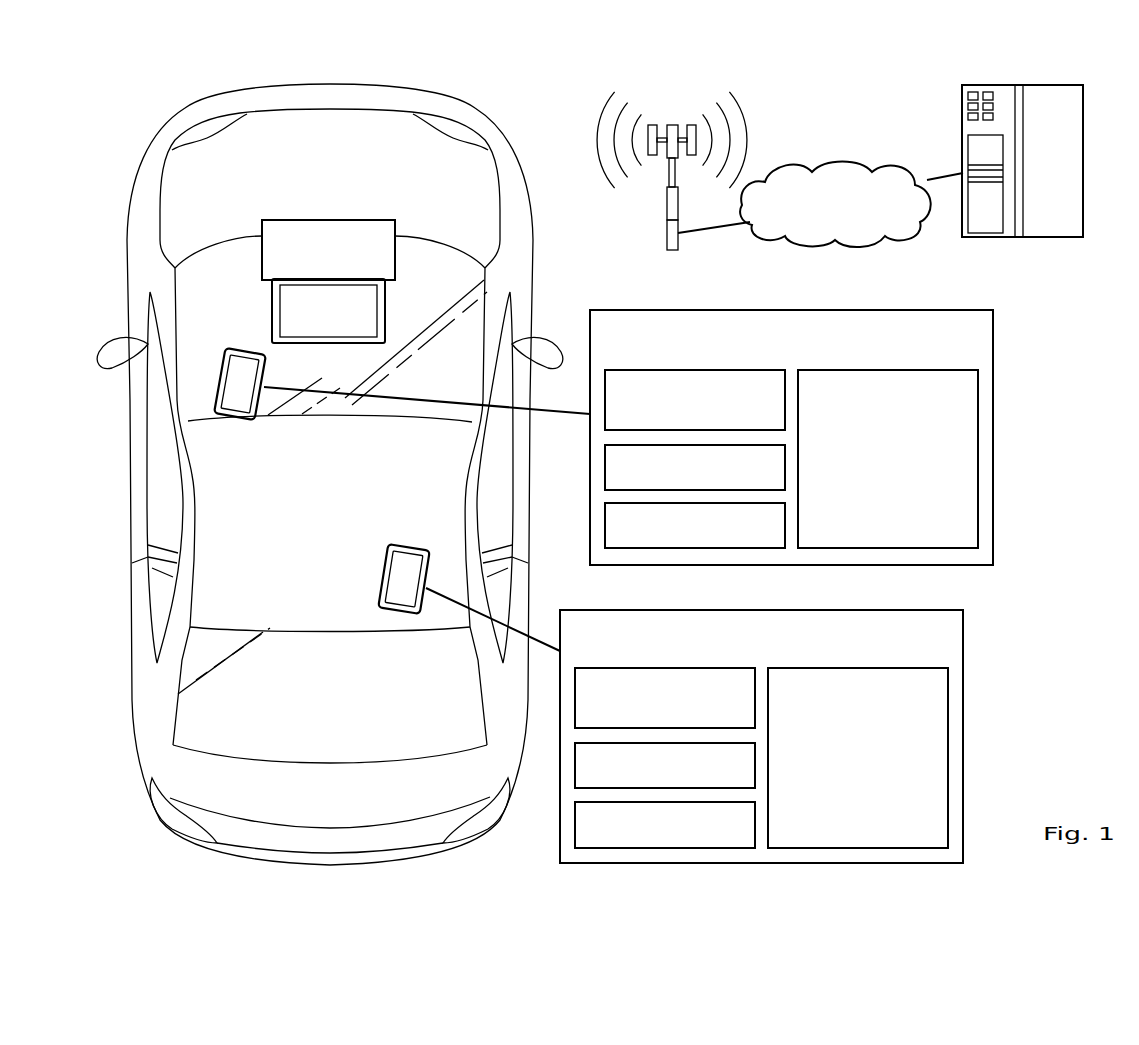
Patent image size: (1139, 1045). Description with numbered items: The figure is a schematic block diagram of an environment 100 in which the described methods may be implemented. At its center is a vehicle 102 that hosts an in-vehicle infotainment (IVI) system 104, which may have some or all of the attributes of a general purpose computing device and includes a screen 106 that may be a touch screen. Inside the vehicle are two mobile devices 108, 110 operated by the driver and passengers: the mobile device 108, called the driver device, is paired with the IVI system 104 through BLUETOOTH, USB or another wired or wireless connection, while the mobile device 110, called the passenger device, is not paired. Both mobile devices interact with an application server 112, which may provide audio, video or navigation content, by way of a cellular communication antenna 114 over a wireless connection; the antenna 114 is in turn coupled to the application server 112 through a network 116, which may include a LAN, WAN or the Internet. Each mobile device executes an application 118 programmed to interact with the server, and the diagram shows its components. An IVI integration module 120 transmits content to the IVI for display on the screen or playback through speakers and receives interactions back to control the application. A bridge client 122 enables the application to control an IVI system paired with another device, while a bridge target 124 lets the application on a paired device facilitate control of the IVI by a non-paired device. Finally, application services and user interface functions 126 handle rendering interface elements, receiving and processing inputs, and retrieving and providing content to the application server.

The environment 100 is at (1072, 390).
The vehicle 102 is at (357, 188).
The in-vehicle infotainment (IVI) system 104 is at (360, 260).
The screen 106 is at (345, 320).
The mobile device (driver device) 108 is at (236, 418).
The mobile device (passenger device) 110 is at (410, 549).
The application server 112 is at (1083, 143).
The cellular communication antenna 114 is at (667, 222).
The network 116 is at (892, 213).
The application 118 is at (858, 343).
The IVI integration module 120 is at (745, 421).
The bridge client 122 is at (770, 476).
The bridge target 124 is at (772, 536).
The application services and user interface (UI) functions 126 is at (903, 491).